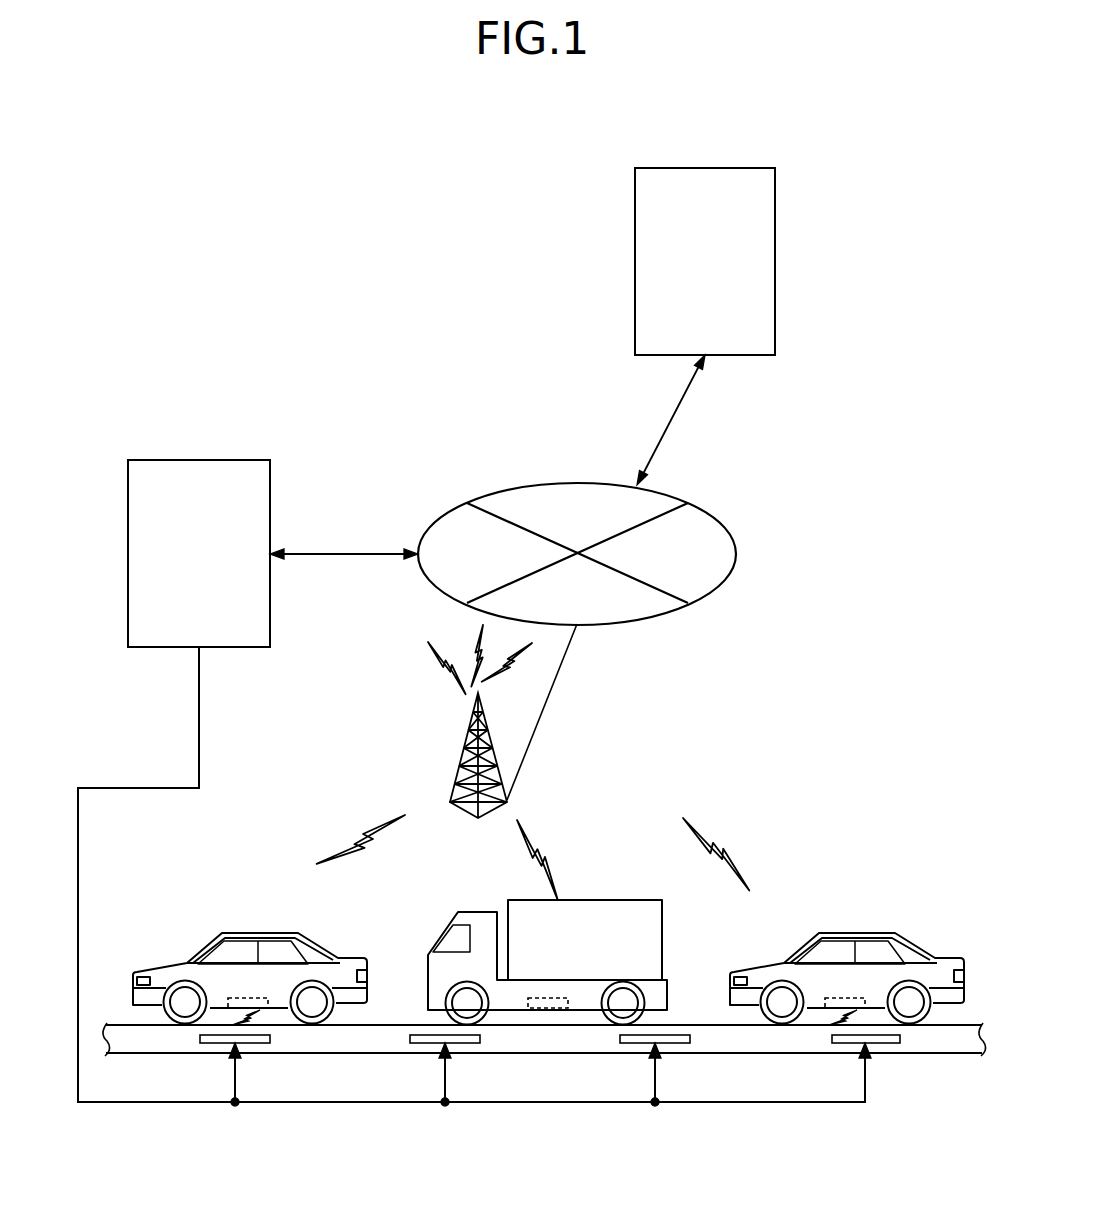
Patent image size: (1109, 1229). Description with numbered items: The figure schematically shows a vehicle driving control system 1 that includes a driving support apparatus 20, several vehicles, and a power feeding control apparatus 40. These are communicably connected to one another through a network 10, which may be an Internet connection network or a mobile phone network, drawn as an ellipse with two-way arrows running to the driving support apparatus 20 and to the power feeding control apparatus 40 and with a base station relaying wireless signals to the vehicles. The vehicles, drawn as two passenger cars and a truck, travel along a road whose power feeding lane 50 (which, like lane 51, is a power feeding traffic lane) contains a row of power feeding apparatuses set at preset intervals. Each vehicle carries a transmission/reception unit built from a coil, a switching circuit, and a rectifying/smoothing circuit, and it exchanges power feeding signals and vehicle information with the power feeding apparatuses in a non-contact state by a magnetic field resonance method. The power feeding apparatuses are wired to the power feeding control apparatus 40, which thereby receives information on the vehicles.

The vehicle driving control system 1 is at (499, 193).
The network 10 is at (572, 483).
The driving support apparatus 20 is at (635, 256).
The power feeding control apparatus 40 is at (128, 558).
The lane 50 is at (544, 1062).
The lane 51 is at (938, 1045).